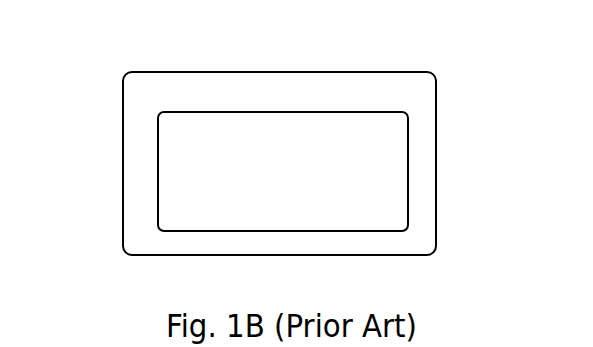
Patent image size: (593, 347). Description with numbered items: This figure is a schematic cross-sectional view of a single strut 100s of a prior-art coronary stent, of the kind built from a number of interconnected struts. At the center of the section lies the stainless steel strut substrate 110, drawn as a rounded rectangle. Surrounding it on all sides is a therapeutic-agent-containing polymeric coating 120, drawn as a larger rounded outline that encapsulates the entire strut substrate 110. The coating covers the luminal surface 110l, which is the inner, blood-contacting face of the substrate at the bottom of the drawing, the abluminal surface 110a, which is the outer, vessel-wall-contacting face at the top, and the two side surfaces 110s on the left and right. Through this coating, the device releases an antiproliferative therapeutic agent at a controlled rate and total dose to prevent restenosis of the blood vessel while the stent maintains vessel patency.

The strut 100s is at (384, 64).
The strut substrate 110 is at (301, 169).
The therapeutic-agent-containing polymeric coating 120 is at (301, 107).
The abluminal surface 110a is at (238, 110).
The luminal surface 110l is at (272, 233).
The side surfaces 110s is at (156, 172).